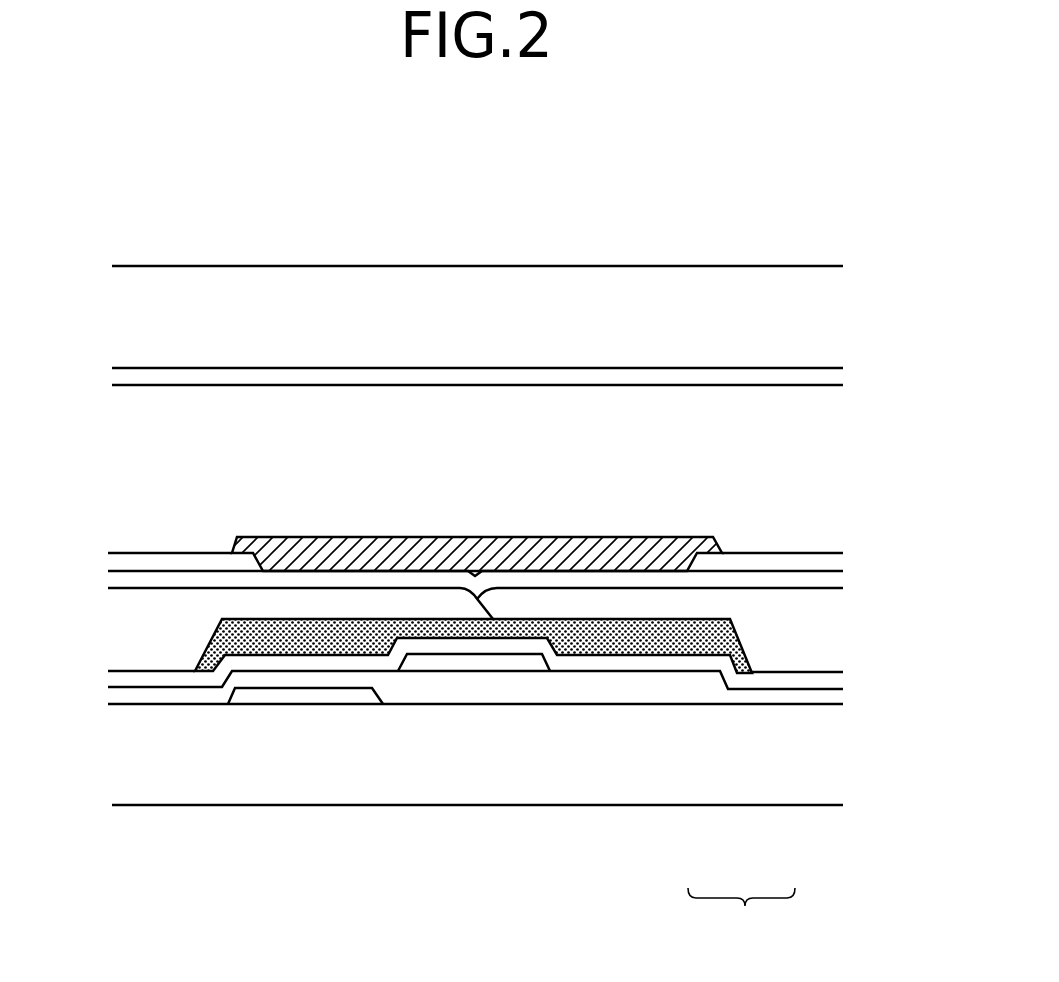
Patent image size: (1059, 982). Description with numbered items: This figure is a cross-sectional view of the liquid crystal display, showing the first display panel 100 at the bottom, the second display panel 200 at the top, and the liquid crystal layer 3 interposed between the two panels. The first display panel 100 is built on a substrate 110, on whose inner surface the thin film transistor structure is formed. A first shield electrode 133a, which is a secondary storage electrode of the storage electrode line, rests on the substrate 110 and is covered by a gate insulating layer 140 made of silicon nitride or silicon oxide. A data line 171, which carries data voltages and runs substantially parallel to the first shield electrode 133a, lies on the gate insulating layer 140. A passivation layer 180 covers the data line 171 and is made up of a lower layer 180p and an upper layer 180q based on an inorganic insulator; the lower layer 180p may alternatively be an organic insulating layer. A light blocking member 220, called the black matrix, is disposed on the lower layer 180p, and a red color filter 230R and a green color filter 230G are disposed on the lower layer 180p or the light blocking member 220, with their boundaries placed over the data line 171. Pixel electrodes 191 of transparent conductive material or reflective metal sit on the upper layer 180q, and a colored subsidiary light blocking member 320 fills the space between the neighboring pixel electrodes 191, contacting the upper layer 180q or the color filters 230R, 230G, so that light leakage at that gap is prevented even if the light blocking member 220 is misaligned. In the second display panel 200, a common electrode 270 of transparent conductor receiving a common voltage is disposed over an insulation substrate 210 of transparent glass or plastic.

The second display panel 200 is at (102, 266).
The insulation substrate 210 is at (482, 290).
The common electrode 270 is at (323, 378).
The liquid crystal layer 3 is at (102, 387).
The first display panel 100 is at (102, 553).
The substrate 110 is at (157, 785).
The first shield electrode 133a is at (300, 696).
The gate insulating layer 140 is at (428, 696).
The data line 171 is at (493, 662).
The lower layer 180p is at (688, 662).
The upper layer 180q is at (778, 583).
The passivation layer 180 is at (741, 916).
The light blocking member 220 is at (600, 652).
The red color filter 230R is at (320, 602).
The green color filter 230G is at (550, 602).
The pixel electrode 191 is at (157, 562).
The colored subsidiary light blocking member 320 is at (646, 556).